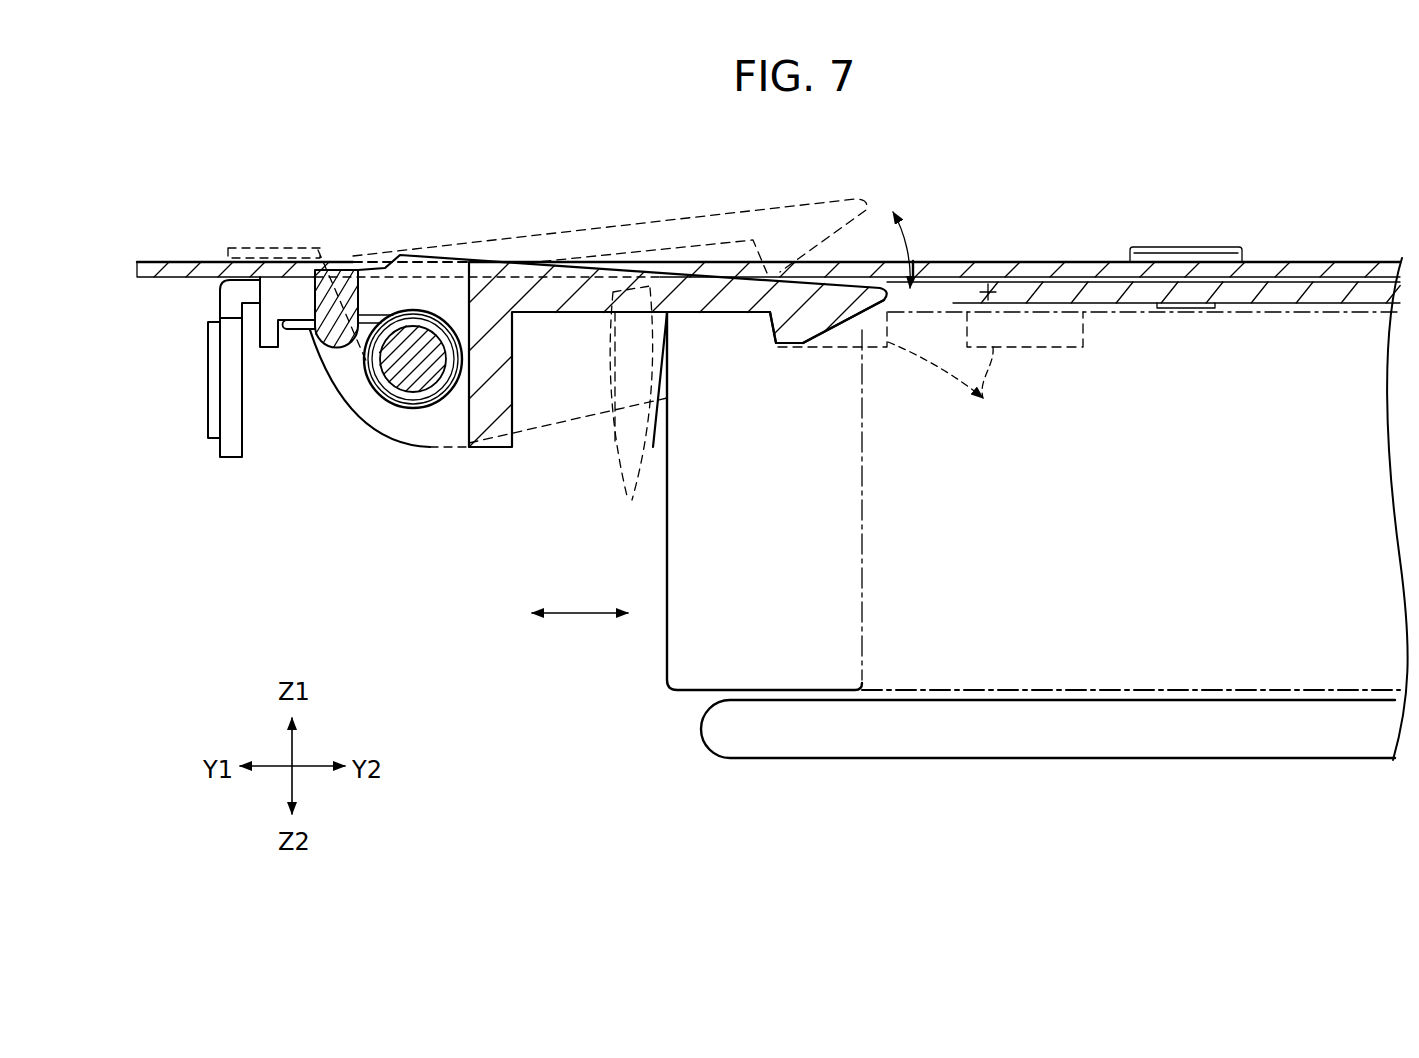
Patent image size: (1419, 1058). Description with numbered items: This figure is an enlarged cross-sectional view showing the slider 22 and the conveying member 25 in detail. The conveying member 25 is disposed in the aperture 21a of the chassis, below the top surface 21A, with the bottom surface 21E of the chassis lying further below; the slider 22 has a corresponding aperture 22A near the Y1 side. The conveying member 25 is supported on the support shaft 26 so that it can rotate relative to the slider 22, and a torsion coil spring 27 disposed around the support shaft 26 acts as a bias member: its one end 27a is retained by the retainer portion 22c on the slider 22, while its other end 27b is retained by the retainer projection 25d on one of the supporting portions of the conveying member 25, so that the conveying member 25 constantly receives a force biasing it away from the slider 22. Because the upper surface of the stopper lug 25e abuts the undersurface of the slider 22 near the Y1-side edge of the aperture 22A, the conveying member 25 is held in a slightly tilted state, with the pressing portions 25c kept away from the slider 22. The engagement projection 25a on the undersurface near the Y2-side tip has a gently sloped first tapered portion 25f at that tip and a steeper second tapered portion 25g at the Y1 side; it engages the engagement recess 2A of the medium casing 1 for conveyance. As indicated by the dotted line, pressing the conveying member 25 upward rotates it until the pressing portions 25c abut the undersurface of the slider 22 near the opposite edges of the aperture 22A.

The medium casing 1 is at (858, 636).
The engagement recess 2A is at (929, 373).
The top surface 21A is at (1320, 287).
The aperture 21a is at (988, 292).
The bottom surface 21E is at (1180, 745).
The slider 22 is at (980, 268).
The aperture 22A is at (843, 270).
The retainer portion 22c is at (245, 267).
The conveying member 25 is at (538, 452).
The engagement projection 25a is at (790, 348).
The pressing portion 25c is at (632, 412).
The retainer projection 25d is at (353, 293).
The stopper lug 25e is at (273, 292).
The first tapered portion 25f is at (843, 330).
The second tapered portion 25g is at (772, 343).
The support shaft 26 is at (408, 383).
The torsion coil spring 27 is at (388, 403).
The one end of torsion coil spring 27a is at (263, 250).
The other end of torsion coil spring 27b is at (295, 329).